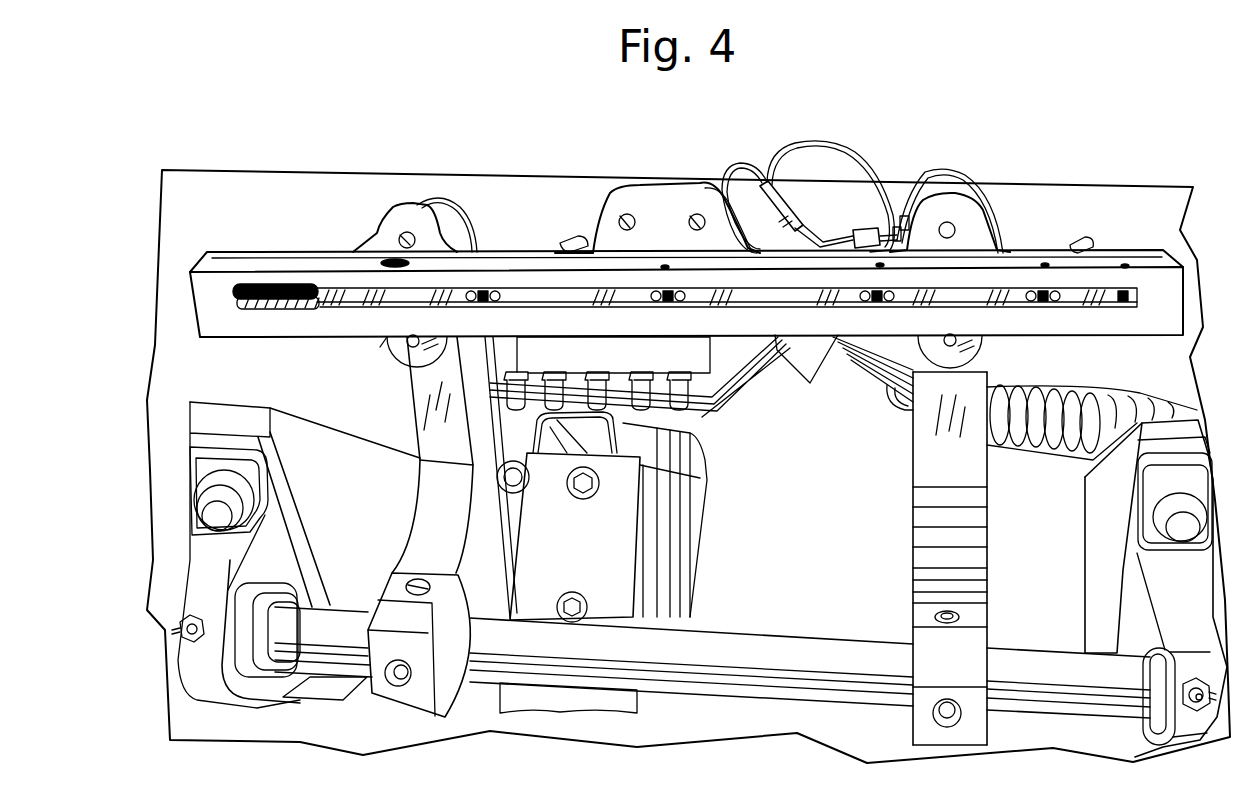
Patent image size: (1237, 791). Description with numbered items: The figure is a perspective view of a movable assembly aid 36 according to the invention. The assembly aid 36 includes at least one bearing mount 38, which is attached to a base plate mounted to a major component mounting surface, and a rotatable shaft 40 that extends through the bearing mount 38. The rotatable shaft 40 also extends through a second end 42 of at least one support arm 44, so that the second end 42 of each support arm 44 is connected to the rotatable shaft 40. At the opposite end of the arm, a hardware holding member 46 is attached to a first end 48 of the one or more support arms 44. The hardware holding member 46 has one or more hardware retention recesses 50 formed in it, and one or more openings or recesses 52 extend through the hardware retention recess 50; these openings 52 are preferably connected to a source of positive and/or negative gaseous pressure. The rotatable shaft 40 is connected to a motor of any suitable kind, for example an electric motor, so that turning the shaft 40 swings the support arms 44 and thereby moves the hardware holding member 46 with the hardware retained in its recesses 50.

The assembly aid 36 is at (300, 152).
The bearing mount 38 is at (275, 515).
The rotatable shaft 40 is at (740, 630).
The second end of support arm 42 is at (365, 695).
The support arm 44 is at (420, 420).
The hardware holding member 46 is at (220, 268).
The first end of support arm 48 is at (408, 342).
The hardware retention recess 50 is at (235, 294).
The opening or recess 52 is at (481, 292).